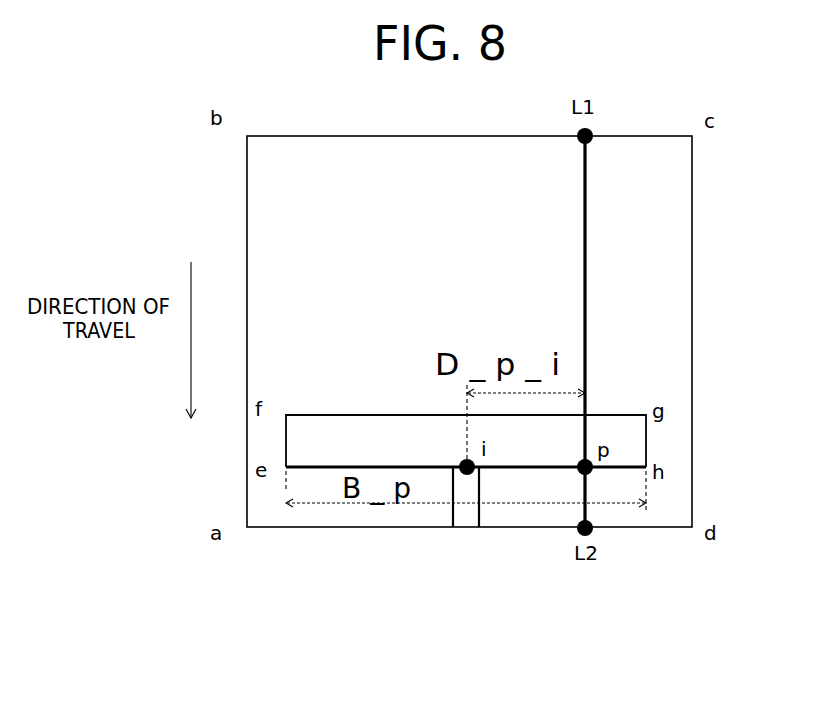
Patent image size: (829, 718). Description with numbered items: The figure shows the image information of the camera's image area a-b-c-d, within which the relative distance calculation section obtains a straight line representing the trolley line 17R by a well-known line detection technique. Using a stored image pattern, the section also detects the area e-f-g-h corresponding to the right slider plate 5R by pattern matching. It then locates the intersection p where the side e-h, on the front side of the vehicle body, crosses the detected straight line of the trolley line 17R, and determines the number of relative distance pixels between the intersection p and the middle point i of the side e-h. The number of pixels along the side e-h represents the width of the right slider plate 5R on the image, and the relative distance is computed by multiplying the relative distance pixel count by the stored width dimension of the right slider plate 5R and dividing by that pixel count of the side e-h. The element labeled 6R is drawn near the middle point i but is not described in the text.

The trolley line 17R is at (584, 260).
The right slider plate 5R is at (319, 423).
The right white line candidate / edge pair 6R is at (465, 516).